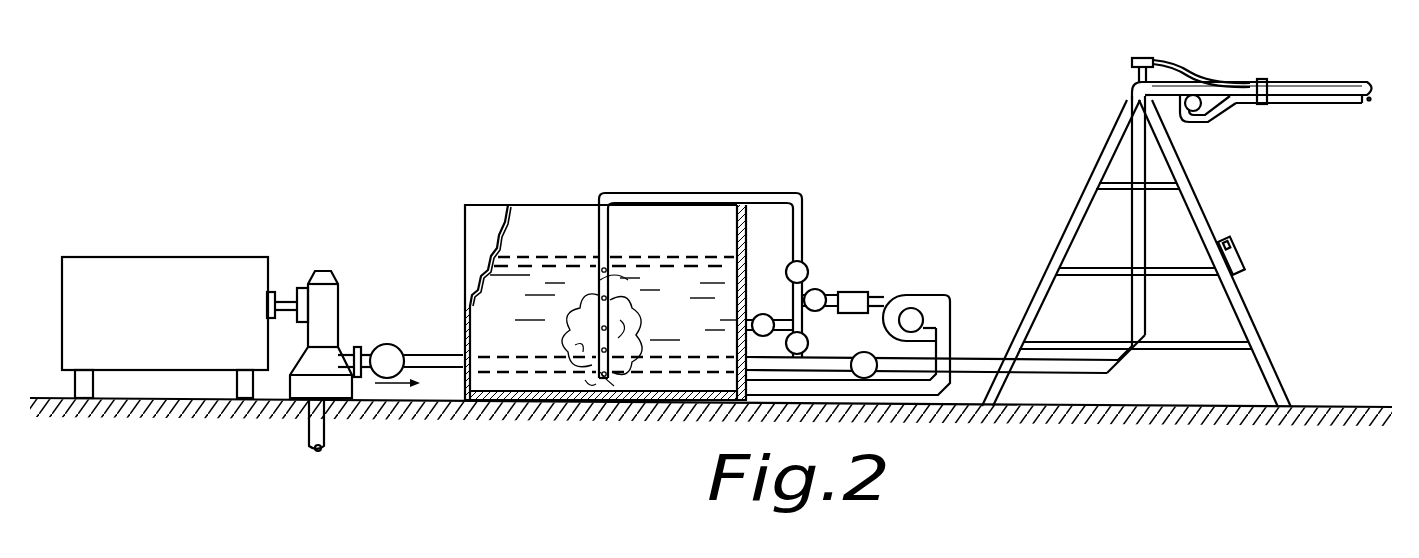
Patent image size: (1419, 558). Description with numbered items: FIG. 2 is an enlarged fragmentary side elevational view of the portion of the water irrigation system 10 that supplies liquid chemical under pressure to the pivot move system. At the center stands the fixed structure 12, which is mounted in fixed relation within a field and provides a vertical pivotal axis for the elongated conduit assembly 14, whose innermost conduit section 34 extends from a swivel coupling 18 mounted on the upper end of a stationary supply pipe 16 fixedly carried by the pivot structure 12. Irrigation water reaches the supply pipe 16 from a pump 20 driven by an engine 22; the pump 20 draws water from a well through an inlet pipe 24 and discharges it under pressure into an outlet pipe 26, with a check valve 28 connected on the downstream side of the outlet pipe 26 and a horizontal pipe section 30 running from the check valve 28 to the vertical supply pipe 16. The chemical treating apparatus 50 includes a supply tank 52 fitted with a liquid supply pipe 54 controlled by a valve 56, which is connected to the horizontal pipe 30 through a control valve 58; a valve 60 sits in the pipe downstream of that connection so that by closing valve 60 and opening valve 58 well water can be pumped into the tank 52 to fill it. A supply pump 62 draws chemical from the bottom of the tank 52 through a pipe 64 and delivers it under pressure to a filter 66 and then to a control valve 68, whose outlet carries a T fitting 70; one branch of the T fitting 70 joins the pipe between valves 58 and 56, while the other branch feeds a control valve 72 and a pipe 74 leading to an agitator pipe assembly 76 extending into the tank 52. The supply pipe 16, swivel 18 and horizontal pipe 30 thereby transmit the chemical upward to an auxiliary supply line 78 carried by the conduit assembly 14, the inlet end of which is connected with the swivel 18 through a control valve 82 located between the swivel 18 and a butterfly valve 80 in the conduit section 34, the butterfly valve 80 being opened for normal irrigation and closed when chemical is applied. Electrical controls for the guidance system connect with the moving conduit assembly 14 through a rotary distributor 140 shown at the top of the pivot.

The water irrigation system 10 is at (1108, 52).
The fixed structure 12 is at (1194, 223).
The conduit assembly 14 is at (1316, 76).
The stationary supply pipe 16 is at (1136, 216).
The swivel coupling 18 is at (1136, 92).
The pump 20 is at (330, 304).
The engine 22 is at (177, 262).
The inlet pipe 24 is at (311, 427).
The outlet pipe 26 is at (362, 347).
The check valve 28 is at (404, 350).
The horizontal pipe section 30 is at (1045, 368).
The conduit section 34 is at (1362, 82).
The apparatus 50 is at (452, 203).
The supply tank 52 is at (465, 257).
The liquid supply pipe 54 is at (748, 335).
The valve 56 is at (808, 340).
The control valve 58 is at (803, 356).
The valve 60 is at (875, 355).
The supply pump 62 is at (913, 297).
The pipe 64 is at (944, 338).
The filter 66 is at (856, 292).
The control valve 68 is at (817, 289).
The T fitting 70 is at (800, 303).
The control valve 72 is at (799, 261).
The pipe 74 is at (660, 196).
The agitator pipe assembly 76 is at (626, 330).
The auxiliary supply line 78 is at (1332, 107).
The butterfly valve 80 is at (1248, 84).
The control valve 82 is at (1181, 108).
The rotary distributor 140 is at (1155, 61).